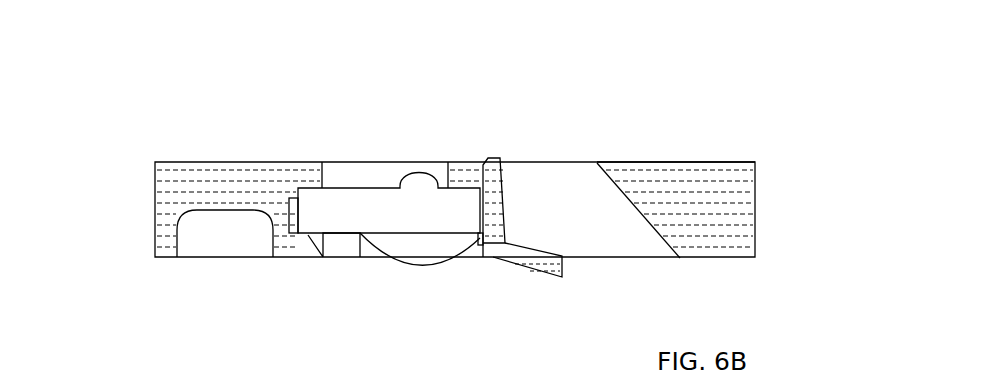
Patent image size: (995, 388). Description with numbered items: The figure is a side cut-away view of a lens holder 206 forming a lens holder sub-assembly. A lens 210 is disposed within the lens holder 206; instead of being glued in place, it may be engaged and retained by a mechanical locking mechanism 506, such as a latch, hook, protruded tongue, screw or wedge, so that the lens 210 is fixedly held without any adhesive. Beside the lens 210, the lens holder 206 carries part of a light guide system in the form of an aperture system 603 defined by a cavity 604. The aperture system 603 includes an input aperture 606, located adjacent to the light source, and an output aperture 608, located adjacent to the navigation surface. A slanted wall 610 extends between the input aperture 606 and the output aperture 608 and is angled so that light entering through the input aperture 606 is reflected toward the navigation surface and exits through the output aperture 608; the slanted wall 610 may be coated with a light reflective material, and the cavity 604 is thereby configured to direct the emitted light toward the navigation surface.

The lens holder 206 is at (150, 244).
The lens 210 is at (363, 210).
The mechanical locking mechanism 506 is at (497, 198).
The aperture system 603 is at (450, 68).
The cavity 604 is at (602, 225).
The input aperture 606 is at (572, 253).
The output aperture 608 is at (560, 162).
The slanted wall 610 is at (622, 195).